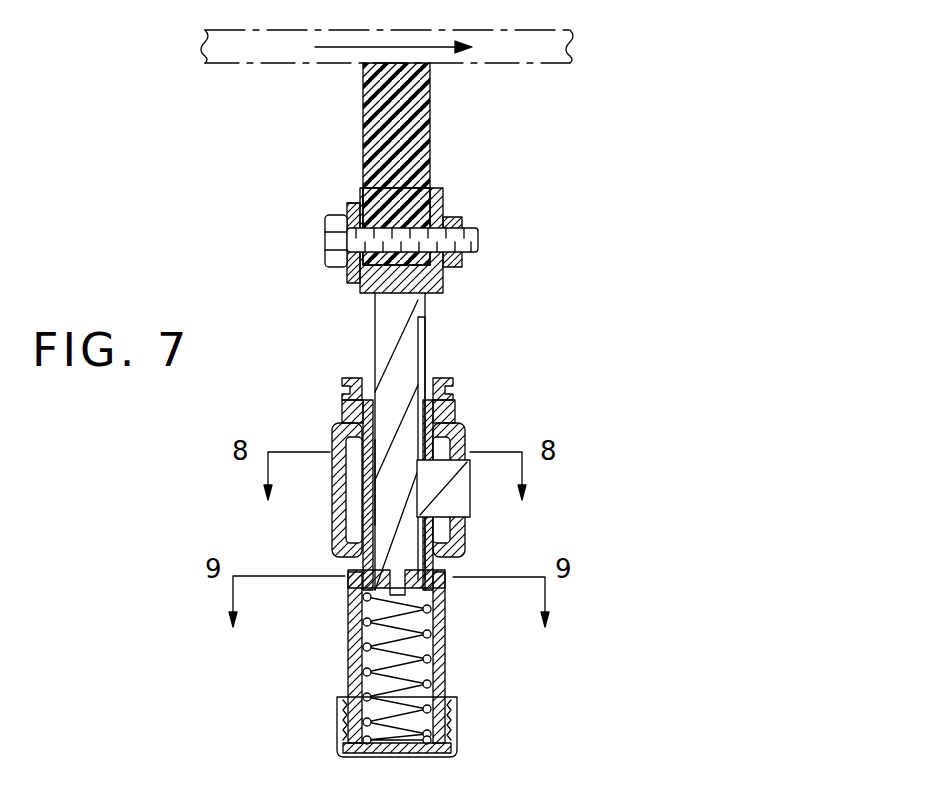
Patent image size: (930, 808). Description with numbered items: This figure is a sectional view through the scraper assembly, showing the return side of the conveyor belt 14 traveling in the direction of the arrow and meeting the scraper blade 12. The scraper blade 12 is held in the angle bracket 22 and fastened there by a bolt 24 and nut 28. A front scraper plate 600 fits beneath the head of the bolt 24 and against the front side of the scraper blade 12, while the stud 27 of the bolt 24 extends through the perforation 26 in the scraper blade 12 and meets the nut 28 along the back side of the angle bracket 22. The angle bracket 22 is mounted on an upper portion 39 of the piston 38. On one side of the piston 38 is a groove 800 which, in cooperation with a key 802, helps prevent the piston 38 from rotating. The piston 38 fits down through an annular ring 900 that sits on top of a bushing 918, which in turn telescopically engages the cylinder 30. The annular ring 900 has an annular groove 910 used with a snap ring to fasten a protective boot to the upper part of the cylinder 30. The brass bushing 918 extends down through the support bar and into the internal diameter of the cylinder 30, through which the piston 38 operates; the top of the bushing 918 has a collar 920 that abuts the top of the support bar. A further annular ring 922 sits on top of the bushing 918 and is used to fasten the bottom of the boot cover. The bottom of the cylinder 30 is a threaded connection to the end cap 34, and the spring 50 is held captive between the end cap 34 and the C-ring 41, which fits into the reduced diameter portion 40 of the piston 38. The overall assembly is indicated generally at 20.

The conveyor belt 14 is at (553, 34).
The scraper blade 12 is at (430, 115).
The angle bracket 22 is at (444, 196).
The perforation 26 is at (360, 202).
The bolt 24 is at (323, 232).
The nut 28 is at (463, 222).
The stud 27 is at (468, 256).
The front scraper plate 600 is at (346, 276).
The upper portion of the piston 39 is at (375, 328).
The groove 800 is at (426, 335).
The annular ring 922 is at (340, 396).
The annular groove 910 is at (455, 392).
The collar 920 is at (346, 414).
The annular ring 900 is at (462, 408).
The piston 38 is at (392, 480).
The bushing 918 is at (362, 521).
The key 802 is at (462, 496).
The C-ring 41 is at (452, 566).
The reduced diameter portion 40 is at (350, 582).
The cylinder 30 is at (348, 646).
The spring 50 is at (441, 640).
The end cap 34 is at (458, 738).
The damper assembly 20 is at (330, 685).